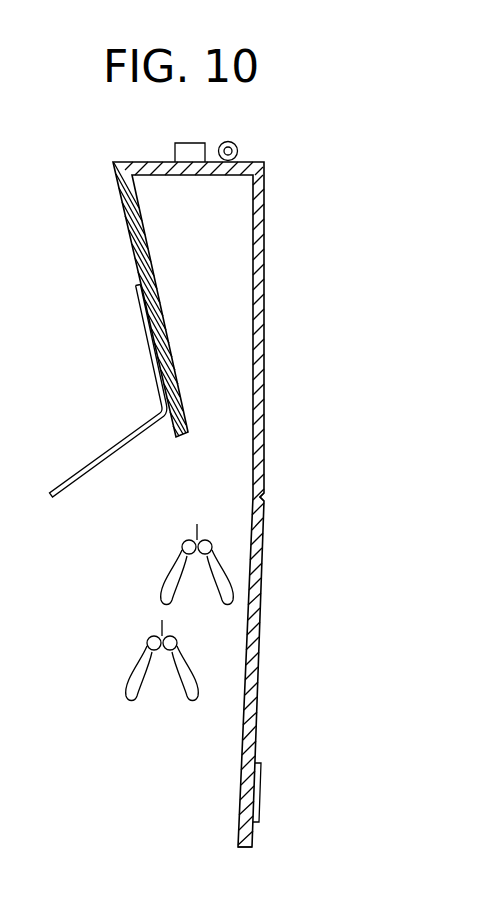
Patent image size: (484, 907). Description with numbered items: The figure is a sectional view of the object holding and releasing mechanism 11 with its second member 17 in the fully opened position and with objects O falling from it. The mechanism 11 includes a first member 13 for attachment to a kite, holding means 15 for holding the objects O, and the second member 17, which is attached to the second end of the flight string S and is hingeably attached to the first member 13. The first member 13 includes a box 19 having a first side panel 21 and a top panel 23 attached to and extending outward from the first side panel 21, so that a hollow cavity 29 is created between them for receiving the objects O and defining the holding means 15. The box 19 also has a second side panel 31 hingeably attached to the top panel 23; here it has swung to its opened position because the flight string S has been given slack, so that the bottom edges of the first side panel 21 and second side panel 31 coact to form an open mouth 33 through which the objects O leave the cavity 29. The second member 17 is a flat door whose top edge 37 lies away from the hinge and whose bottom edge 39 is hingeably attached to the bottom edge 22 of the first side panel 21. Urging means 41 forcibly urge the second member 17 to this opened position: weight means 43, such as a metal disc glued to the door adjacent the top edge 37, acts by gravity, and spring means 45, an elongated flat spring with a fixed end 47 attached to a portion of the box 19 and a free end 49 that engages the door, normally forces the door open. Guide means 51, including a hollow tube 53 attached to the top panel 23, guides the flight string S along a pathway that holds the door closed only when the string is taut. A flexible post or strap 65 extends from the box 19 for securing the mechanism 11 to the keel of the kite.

The object holding and releasing mechanism 11 is at (292, 124).
The first member 13 is at (130, 158).
The holding means 15 is at (216, 242).
The second member 17 is at (263, 666).
The box 19 is at (315, 297).
The first side panel 21 is at (266, 331).
The bottom edge of the first side panel 22 is at (261, 482).
The top panel 23 is at (155, 160).
The cavity 29 is at (210, 275).
The second side panel 31 is at (128, 229).
The mouth 33 is at (203, 446).
The top edge 37 is at (252, 839).
The bottom edge 39 is at (262, 498).
The urging means 41 is at (88, 443).
The weight means 43 is at (261, 800).
The spring means 45 is at (148, 343).
The fixed end 47 is at (137, 300).
The free end 49 is at (63, 486).
The guide means 51 is at (238, 106).
The tube 53 is at (250, 158).
The flexible post or strap 65 is at (190, 142).
The flight string S is at (244, 143).
The objects O is at (135, 668).